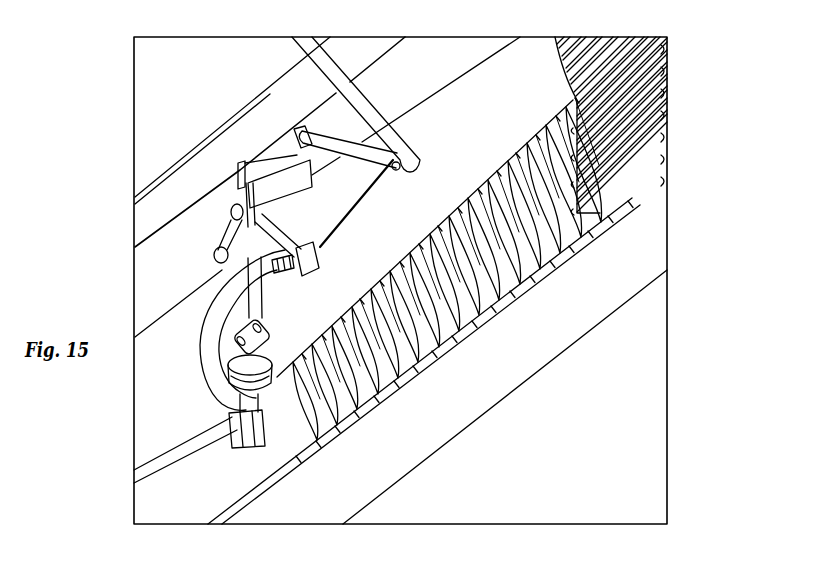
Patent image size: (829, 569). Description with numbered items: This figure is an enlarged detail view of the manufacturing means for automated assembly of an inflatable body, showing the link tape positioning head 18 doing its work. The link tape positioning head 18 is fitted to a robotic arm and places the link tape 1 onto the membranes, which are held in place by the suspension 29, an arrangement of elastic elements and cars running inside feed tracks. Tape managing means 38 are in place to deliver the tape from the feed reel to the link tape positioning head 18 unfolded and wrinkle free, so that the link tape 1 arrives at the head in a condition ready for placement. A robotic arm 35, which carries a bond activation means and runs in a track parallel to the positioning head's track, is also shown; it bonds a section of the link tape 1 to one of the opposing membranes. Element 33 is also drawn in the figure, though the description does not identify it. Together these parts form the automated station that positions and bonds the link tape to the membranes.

The link tape 1 is at (345, 89).
The link tape positioning head 18 is at (248, 452).
The suspension 29 is at (597, 69).
The coil spring conveyor 33 is at (425, 327).
The robotic arm 35 is at (231, 232).
The tape managing means 38 is at (425, 165).